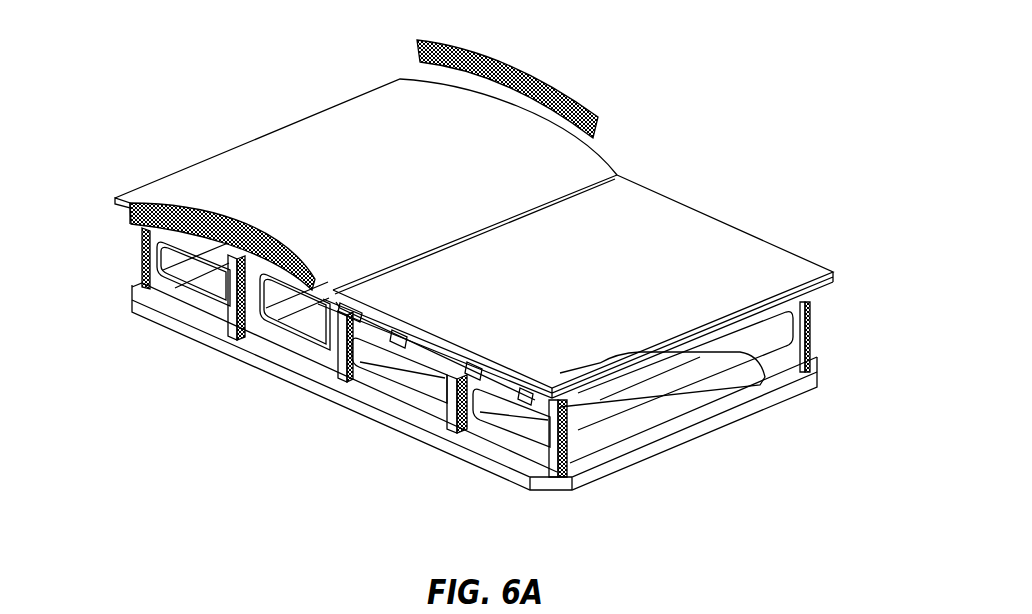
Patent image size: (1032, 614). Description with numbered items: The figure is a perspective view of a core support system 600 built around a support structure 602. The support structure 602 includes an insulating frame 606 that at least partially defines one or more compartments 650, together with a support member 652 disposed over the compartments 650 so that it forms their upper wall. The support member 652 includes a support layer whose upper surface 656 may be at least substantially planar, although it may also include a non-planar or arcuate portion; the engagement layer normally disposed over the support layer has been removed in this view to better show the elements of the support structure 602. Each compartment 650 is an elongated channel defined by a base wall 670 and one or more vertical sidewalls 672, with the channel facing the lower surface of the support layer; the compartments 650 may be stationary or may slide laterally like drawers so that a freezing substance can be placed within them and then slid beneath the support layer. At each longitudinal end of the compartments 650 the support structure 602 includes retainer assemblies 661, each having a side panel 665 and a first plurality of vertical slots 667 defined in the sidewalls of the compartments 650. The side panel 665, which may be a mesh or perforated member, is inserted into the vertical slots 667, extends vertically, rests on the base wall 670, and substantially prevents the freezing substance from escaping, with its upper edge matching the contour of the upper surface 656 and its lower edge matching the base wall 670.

The core support system 600 is at (780, 96).
The support structure 602 is at (830, 367).
The insulating frame 606 is at (773, 383).
The compartments 650 is at (368, 326).
The support member 652 is at (663, 193).
The upper surface 656 is at (737, 252).
The retainer assemblies 661 is at (110, 212).
The side panel 665 is at (568, 92).
The first plurality of vertical slots 667 is at (409, 335).
The base wall 670 is at (462, 428).
The vertical sidewalls 672 is at (392, 342).